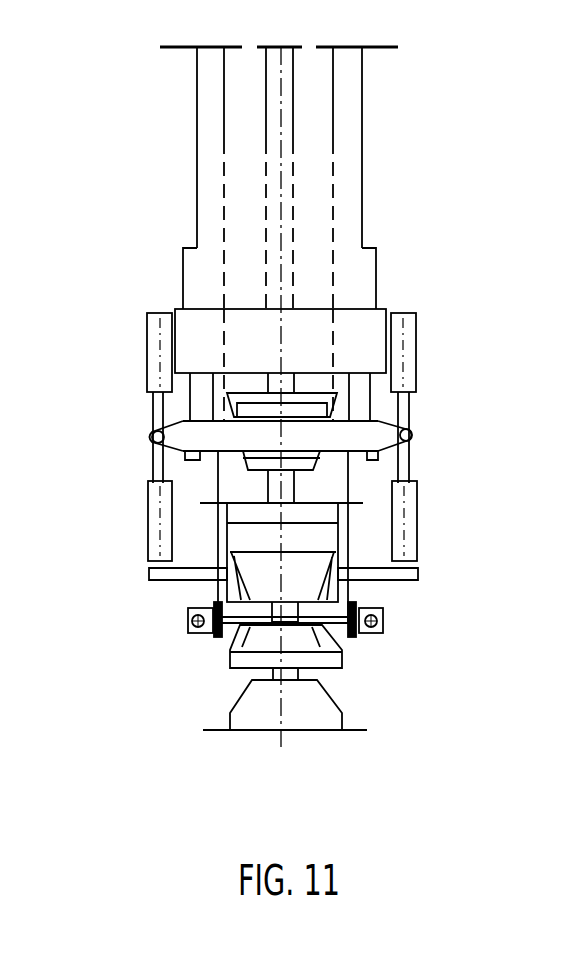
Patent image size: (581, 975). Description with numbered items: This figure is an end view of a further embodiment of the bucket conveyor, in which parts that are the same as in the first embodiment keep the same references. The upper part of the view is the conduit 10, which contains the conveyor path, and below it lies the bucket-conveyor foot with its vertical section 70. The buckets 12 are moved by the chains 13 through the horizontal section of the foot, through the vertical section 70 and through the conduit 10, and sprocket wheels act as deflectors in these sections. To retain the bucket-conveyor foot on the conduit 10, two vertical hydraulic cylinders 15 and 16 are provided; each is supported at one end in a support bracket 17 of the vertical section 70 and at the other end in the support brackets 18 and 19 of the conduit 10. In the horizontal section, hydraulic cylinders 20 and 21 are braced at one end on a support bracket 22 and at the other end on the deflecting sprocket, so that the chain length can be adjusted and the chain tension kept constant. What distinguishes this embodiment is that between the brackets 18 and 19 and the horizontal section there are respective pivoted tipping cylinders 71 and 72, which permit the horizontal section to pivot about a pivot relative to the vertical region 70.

The conduit 10 is at (525, 57).
The buckets 12 is at (302, 544).
The chains 13 is at (217, 480).
The vertical hydraulic cylinder 15 is at (411, 353).
The vertical hydraulic cylinder 16 is at (152, 343).
The support bracket 17 is at (355, 327).
The support bracket 18 is at (412, 430).
The support bracket 19 is at (162, 437).
The hydraulic cylinder 20 is at (383, 621).
The hydraulic cylinder 21 is at (186, 622).
The support bracket 22 is at (363, 633).
The vertical section 70 is at (87, 438).
The pivoted tipping cylinder 71 is at (411, 535).
The pivoted tipping cylinder 72 is at (160, 540).